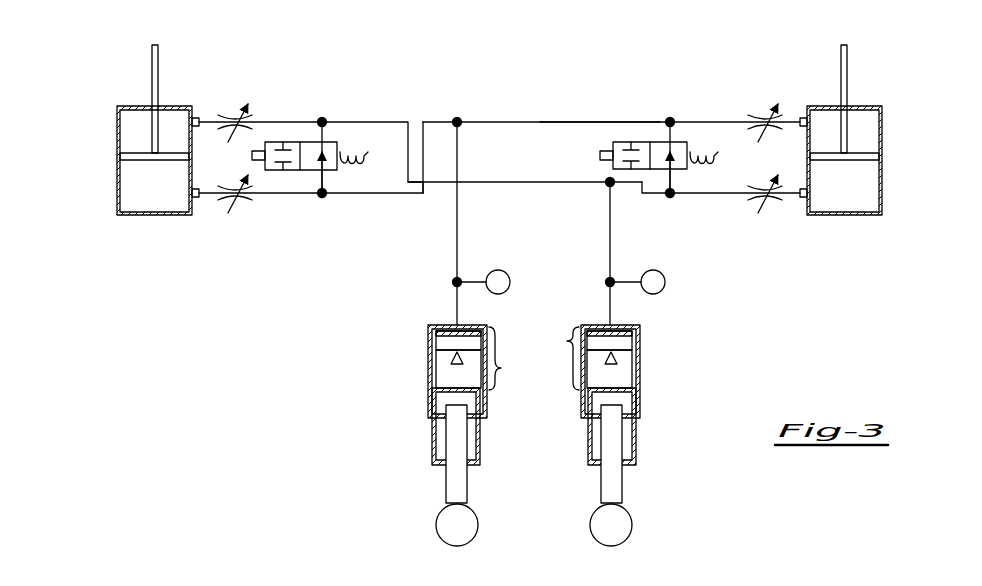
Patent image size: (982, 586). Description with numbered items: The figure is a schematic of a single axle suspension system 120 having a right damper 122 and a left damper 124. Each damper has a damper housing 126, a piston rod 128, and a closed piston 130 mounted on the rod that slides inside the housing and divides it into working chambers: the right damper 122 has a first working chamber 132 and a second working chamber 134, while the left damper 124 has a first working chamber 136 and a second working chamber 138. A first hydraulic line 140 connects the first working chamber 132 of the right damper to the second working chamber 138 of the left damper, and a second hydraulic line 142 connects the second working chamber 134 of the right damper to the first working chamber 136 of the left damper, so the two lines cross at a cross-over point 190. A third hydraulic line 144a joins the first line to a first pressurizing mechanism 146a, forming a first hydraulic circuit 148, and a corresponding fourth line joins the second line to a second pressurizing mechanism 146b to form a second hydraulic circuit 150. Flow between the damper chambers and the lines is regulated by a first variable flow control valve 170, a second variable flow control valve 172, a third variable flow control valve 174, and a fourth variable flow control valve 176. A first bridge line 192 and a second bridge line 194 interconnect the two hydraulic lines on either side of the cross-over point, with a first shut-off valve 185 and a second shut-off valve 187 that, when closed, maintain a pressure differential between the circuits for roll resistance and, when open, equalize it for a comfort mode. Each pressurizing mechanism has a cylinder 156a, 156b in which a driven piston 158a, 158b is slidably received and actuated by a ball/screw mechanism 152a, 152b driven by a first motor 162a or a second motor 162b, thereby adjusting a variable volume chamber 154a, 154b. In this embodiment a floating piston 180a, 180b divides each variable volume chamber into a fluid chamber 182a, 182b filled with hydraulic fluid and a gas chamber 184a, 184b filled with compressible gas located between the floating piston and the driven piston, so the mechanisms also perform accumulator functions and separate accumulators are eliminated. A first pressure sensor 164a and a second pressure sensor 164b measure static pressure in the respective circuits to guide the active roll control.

The single axle suspension system 120 is at (270, 400).
The right damper 122 is at (885, 98).
The left damper 124 is at (112, 86).
The damper housing 126 is at (117, 178).
The piston rod 128 is at (152, 55).
The piston 130 is at (135, 155).
The first working chamber of the right damper 132 is at (827, 120).
The second working chamber of the right damper 134 is at (860, 198).
The first working chamber of the left damper 136 is at (172, 120).
The second working chamber of the left damper 138 is at (140, 195).
The first hydraulic line 140 is at (600, 120).
The second hydraulic line 142 is at (575, 184).
The third hydraulic line 144a is at (457, 268).
The first pressurizing mechanism 146a is at (406, 444).
The second pressurizing mechanism 146b is at (682, 445).
The first hydraulic circuit 148 is at (563, 119).
The second hydraulic circuit 150 is at (541, 186).
The ball/screw mechanism 152a is at (461, 473).
The ball/screw mechanism 152b is at (615, 472).
The variable volume chamber 154a is at (515, 358).
The variable volume chamber 154b is at (552, 358).
The cylinder 156a is at (438, 388).
The cylinder 156b is at (638, 388).
The driven piston 158a is at (432, 434).
The driven piston 158b is at (637, 434).
The first motor 162a is at (436, 528).
The second motor 162b is at (633, 525).
The first pressure sensor 164a is at (507, 293).
The second pressure sensor 164b is at (665, 272).
The first variable flow control valve 170 is at (752, 118).
The second variable flow control valve 172 is at (245, 208).
The third variable flow control valve 174 is at (777, 200).
The fourth variable flow control valve 176 is at (232, 100).
The floating piston 180a is at (445, 352).
The floating piston 180b is at (625, 352).
The fluid chamber 182a is at (443, 340).
The fluid chamber 182b is at (626, 340).
The gas chamber 184a is at (447, 360).
The gas chamber 184b is at (622, 360).
The first shut-off valve 185 is at (603, 151).
The second shut-off valve 187 is at (337, 142).
The cross-over point 190 is at (429, 186).
The first bridge line 192 is at (673, 186).
The second bridge line 194 is at (323, 180).